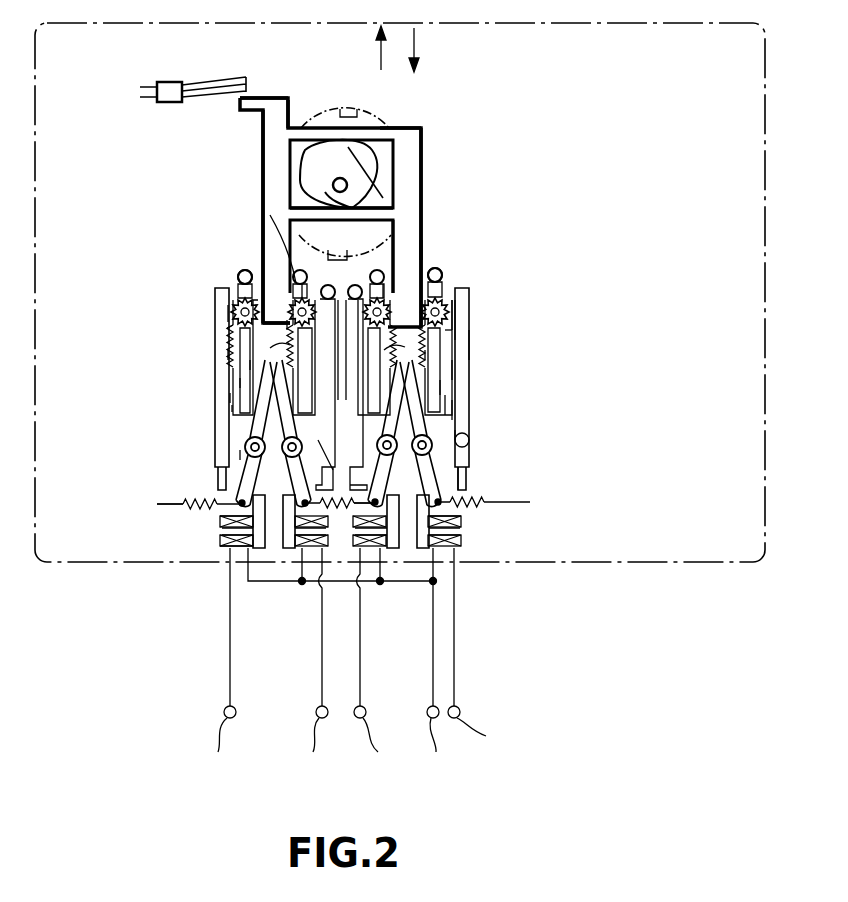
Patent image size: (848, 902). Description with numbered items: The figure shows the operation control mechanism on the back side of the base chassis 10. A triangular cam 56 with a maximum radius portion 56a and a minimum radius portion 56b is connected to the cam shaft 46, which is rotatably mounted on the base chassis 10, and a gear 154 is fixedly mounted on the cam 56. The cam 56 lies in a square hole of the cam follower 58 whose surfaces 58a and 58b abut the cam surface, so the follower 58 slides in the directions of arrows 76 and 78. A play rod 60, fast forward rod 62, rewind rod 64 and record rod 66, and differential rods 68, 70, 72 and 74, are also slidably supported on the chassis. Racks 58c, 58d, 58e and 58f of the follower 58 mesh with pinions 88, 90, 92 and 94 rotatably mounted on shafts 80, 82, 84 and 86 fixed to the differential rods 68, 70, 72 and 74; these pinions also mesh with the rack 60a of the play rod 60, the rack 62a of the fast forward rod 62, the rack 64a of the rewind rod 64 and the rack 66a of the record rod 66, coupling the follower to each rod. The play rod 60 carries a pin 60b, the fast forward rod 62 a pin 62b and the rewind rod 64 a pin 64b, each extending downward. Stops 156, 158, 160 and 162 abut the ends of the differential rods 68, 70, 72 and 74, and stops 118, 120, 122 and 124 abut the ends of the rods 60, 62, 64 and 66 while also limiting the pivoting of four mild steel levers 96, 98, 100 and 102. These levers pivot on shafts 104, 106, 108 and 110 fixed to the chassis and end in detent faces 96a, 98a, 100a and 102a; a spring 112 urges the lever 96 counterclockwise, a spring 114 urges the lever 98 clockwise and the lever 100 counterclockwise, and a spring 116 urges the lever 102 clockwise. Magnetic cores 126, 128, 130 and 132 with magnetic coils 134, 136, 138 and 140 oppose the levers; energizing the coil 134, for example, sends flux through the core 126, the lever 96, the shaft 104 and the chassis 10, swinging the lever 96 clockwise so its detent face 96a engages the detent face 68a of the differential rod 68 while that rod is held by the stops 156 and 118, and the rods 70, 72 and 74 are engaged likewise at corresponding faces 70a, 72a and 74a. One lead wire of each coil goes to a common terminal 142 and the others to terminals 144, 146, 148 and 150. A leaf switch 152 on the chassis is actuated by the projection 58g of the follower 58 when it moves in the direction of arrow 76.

The base chassis 10 is at (422, 292).
The cam shaft 46 is at (340, 178).
The triangular cam 56 is at (373, 168).
The maximum radius portion 56a is at (388, 141).
The minimum radius portion 56b is at (356, 198).
The cam follower 58 is at (422, 190).
The surface of square hole 58a is at (393, 132).
The surface of square hole 58b is at (386, 213).
The rack 58c is at (424, 318).
The rack 58d is at (422, 256).
The rack 58e is at (292, 290).
The rack 58f is at (290, 305).
The projection 58g is at (258, 98).
The play rod 60 is at (460, 410).
The rack 60a is at (440, 322).
The pin 60b is at (469, 440).
The fast forward rod 62 is at (365, 420).
The rack 62a is at (296, 342).
The pin 62b is at (353, 286).
The rewind rod 64 is at (337, 409).
The rack 64a is at (283, 440).
The pin 64b is at (327, 286).
The record rod 66 is at (230, 427).
The rack 66a is at (230, 344).
The differential rod 68 is at (442, 290).
The detent face 68a is at (440, 360).
The differential rod 70 is at (385, 283).
The pawl tip 70a is at (375, 360).
The differential rod 72 is at (300, 268).
The pawl tip 72a is at (230, 363).
The differential rod 74 is at (237, 274).
The pawl tip 74a is at (230, 377).
The arrow 76 is at (363, 48).
The arrow 78 is at (434, 49).
The shaft 80 is at (448, 322).
The shaft 82 is at (423, 266).
The shaft 84 is at (286, 305).
The shaft 86 is at (220, 293).
The pinion 88 is at (458, 338).
The pinion 90 is at (424, 238).
The pinion 92 is at (297, 292).
The pinion 94 is at (230, 335).
The lever 96 is at (440, 420).
The detent face 96a is at (440, 375).
The lever 98 is at (440, 412).
The detent face 98a is at (440, 390).
The lever 100 is at (230, 447).
The detent face 100a is at (232, 406).
The lever 102 is at (232, 473).
The detent face 102a is at (232, 387).
The shaft 104 is at (440, 427).
The shaft 106 is at (398, 440).
The shaft 108 is at (280, 440).
The shaft 110 is at (232, 455).
The spring 112 is at (495, 498).
The spring 114 is at (326, 548).
The spring 116 is at (157, 507).
The stop 118 is at (467, 477).
The stop 120 is at (368, 492).
The stop 122 is at (328, 475).
The stop 124 is at (230, 497).
The magnetic core 126 is at (463, 528).
The magnetic core 128 is at (388, 548).
The magnetic core 130 is at (262, 545).
The magnetic core 132 is at (222, 532).
The magnetic coil 134 is at (463, 545).
The magnetic coil 136 is at (380, 585).
The magnetic coil 138 is at (303, 585).
The magnetic coil 140 is at (218, 547).
The terminal 142 is at (458, 672).
The terminal 144 is at (492, 647).
The terminal 146 is at (380, 742).
The terminal 148 is at (308, 663).
The terminal 150 is at (218, 663).
The leaf switch 152 is at (168, 82).
The gear 154 is at (313, 116).
The stop 156 is at (425, 285).
The stop 158 is at (383, 286).
The stop 160 is at (293, 283).
The stop 162 is at (237, 270).